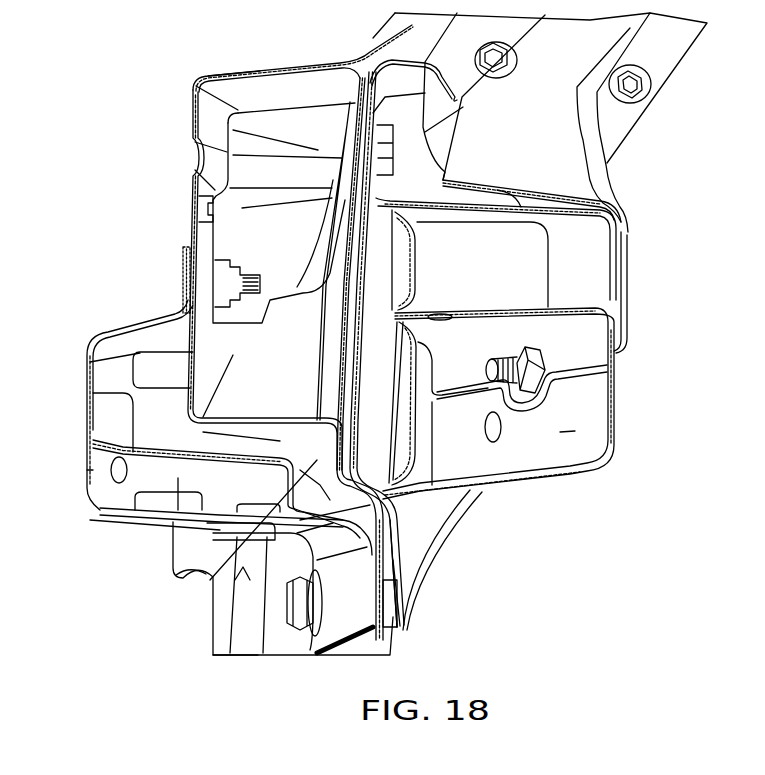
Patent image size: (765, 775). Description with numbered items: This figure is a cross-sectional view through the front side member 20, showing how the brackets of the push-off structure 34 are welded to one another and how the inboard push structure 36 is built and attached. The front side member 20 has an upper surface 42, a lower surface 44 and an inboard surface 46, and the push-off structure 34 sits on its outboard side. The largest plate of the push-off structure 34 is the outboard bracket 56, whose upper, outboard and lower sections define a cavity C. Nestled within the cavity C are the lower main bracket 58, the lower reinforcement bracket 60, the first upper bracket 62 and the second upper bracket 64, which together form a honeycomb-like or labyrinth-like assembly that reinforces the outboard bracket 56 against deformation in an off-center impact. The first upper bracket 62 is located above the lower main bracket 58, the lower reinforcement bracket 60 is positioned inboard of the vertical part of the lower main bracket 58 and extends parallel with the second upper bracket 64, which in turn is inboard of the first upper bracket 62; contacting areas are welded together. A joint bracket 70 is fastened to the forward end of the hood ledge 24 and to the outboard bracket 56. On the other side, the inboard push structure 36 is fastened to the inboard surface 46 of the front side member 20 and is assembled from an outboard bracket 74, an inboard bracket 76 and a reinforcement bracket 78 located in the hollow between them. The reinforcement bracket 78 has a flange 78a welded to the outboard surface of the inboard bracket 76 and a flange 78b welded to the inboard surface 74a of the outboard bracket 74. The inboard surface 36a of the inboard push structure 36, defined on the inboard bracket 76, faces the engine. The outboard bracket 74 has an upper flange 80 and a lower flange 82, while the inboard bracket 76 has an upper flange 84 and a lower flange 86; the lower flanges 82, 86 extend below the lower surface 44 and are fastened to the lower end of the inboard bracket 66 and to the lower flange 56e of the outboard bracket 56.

The front side member 20 is at (262, 64).
The hood ledge 24 is at (672, 43).
The push-off structure 34 is at (645, 327).
The inboard push structure 36 is at (83, 372).
The inboard surface 36a is at (103, 487).
The upper surface 42 is at (248, 73).
The lower surface 44 is at (232, 432).
The inboard surface 46 is at (196, 108).
The outboard bracket 56 is at (620, 402).
The lower flange 56e is at (382, 565).
The lower main bracket 58 is at (540, 440).
The lower reinforcement bracket 60 is at (416, 446).
The first upper bracket 62 is at (612, 270).
The second upper bracket 64 is at (416, 253).
The inboard bracket 66 is at (350, 312).
The joint bracket 70 is at (550, 147).
The outboard bracket 74 is at (255, 443).
The inboard surface 74a is at (306, 490).
The inboard bracket 76 is at (87, 470).
The reinforcement bracket 78 is at (152, 465).
The flange 78a is at (117, 428).
The flange 78b is at (210, 577).
The upper flange 80 is at (195, 235).
The lower flange 82 is at (381, 619).
The upper flange 84 is at (184, 252).
The lower flange 86 is at (340, 613).
The cavity C is at (575, 432).